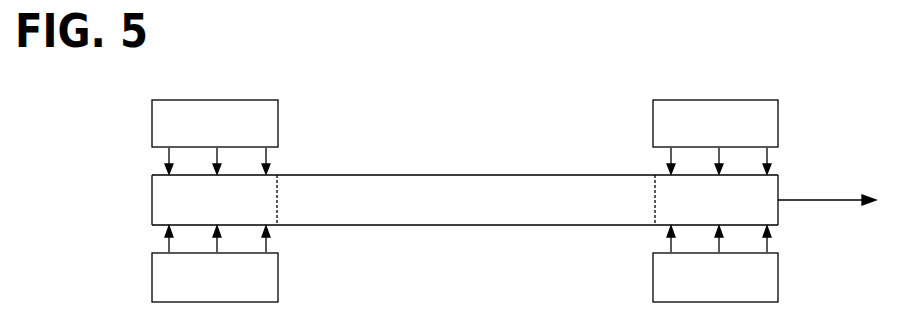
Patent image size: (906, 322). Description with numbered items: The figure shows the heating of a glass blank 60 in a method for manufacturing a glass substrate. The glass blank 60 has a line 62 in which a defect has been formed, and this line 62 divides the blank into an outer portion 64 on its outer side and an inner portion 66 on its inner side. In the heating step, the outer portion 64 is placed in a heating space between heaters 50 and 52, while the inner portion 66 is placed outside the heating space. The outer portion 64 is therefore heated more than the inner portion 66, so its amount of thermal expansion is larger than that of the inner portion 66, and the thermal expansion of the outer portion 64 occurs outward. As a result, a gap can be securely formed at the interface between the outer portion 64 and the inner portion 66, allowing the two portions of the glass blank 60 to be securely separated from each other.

The heater 50 is at (279, 122).
The heater 52 is at (279, 276).
The glass blank 60 is at (521, 162).
The line 62 is at (281, 197).
The outer portion 64 is at (270, 189).
The inner portion 66 is at (525, 208).